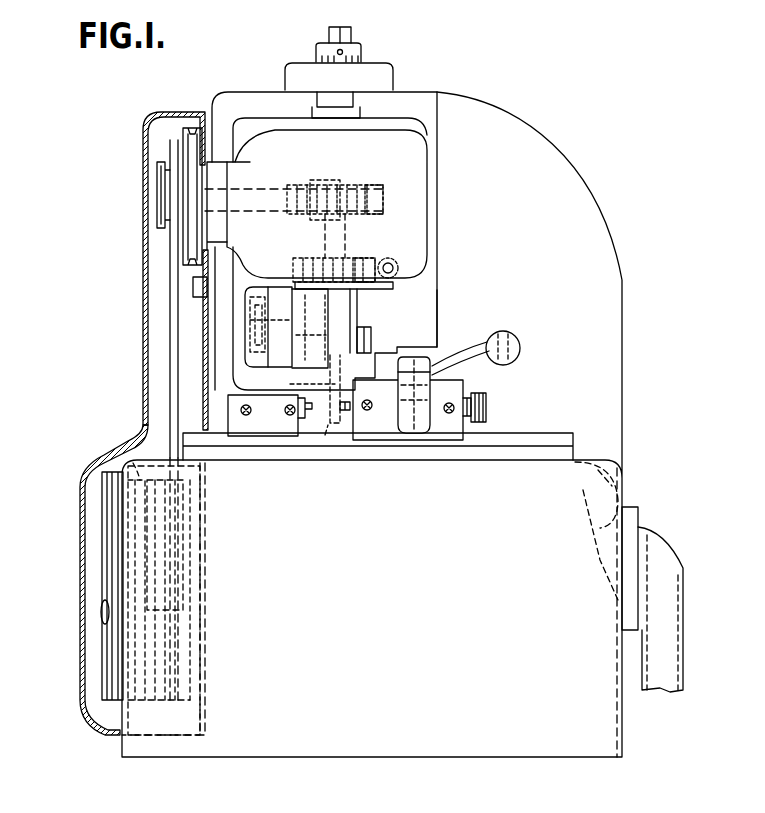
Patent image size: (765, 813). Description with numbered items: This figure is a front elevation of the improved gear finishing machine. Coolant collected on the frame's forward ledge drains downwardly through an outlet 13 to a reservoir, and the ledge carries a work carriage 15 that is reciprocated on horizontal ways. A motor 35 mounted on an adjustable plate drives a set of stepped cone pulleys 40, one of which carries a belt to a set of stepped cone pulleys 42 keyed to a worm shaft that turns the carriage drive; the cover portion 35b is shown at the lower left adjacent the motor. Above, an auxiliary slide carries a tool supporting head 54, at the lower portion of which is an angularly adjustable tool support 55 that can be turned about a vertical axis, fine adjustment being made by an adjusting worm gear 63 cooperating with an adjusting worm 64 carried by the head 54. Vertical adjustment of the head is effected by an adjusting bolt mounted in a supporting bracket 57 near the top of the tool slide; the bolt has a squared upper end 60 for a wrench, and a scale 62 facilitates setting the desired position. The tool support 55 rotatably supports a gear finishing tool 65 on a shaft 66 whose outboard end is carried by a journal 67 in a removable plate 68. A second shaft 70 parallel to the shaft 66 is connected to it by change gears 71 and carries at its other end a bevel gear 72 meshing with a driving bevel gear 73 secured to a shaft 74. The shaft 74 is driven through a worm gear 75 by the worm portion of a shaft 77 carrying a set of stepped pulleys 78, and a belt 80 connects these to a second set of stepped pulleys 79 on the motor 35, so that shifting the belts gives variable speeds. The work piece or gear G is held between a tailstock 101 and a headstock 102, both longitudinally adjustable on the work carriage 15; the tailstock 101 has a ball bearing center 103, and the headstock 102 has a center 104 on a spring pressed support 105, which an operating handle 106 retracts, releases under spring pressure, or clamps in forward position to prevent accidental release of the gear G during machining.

The outlet 13 is at (683, 660).
The work carriage 15 is at (550, 434).
The motor 35 is at (117, 463).
The cover portion 35b is at (133, 463).
The stepped cone pulleys 40 is at (103, 529).
The stepped cone pulleys 42 is at (103, 660).
The tool supporting head 54 is at (422, 165).
The angularly adjustable tool support 55 is at (254, 283).
The supporting bracket 57 is at (395, 78).
The squared upper end 60 is at (350, 35).
The scale 62 is at (363, 60).
The adjusting worm gear 63 is at (302, 264).
The adjusting worm 64 is at (400, 266).
The gear finishing tool 65 is at (418, 357).
The shaft 66 is at (290, 384).
The journal 67 is at (372, 337).
The removable plate 68 is at (358, 309).
The second shaft 70 is at (296, 324).
The change gears 71 is at (250, 319).
The bevel gear 72 is at (393, 308).
The driving bevel gear 73 is at (403, 247).
The shaft 74 is at (348, 241).
The worm gear 75 is at (372, 188).
The shaft 77 is at (284, 186).
The stepped pulleys 78 is at (173, 142).
The stepped pulleys 79 is at (102, 512).
The belt 80 is at (168, 284).
The tailstock 101 is at (263, 436).
The headstock 102 is at (450, 442).
The center 103 is at (312, 418).
The center 104 is at (347, 413).
The spring pressed support 105 is at (349, 415).
The operating handle 106 is at (497, 332).
The gear G is at (325, 435).